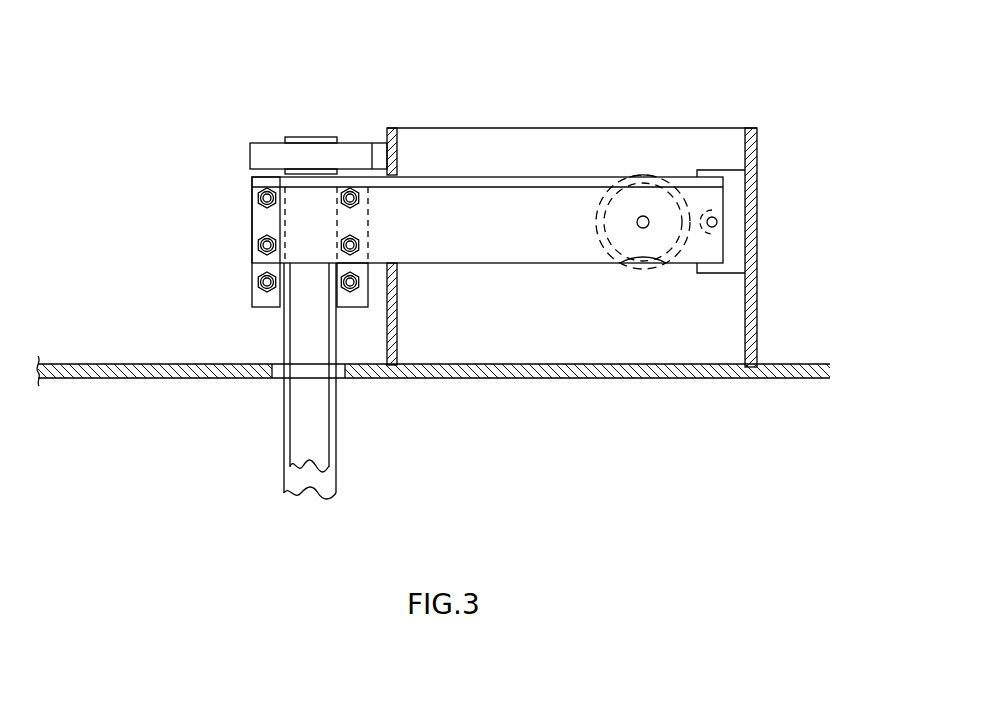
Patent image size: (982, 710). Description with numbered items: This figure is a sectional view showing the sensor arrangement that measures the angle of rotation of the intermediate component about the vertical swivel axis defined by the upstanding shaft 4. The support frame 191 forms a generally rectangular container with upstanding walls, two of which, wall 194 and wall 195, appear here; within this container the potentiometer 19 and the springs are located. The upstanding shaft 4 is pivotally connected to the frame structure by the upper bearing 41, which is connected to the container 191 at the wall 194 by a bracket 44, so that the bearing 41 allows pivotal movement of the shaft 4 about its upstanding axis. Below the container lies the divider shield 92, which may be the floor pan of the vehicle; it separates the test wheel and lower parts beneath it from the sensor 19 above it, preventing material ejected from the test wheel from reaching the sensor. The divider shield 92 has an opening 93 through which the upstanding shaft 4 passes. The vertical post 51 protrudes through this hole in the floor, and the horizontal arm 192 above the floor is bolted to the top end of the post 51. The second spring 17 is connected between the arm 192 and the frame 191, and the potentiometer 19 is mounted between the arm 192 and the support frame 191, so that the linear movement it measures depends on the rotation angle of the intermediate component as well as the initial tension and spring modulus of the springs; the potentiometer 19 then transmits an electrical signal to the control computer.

The support frame 191 is at (460, 98).
The upstanding wall 194 is at (387, 352).
The upstanding wall 195 is at (745, 312).
The upper bearing 41 is at (263, 155).
The bracket 44 is at (378, 152).
The arm 192 is at (557, 250).
The opening 93 is at (283, 362).
The second spring 17 is at (635, 270).
The potentiometer 19 is at (718, 222).
The divider shield 92 is at (70, 367).
The vertical post 51 is at (330, 397).
The upstanding shaft 4 is at (310, 443).